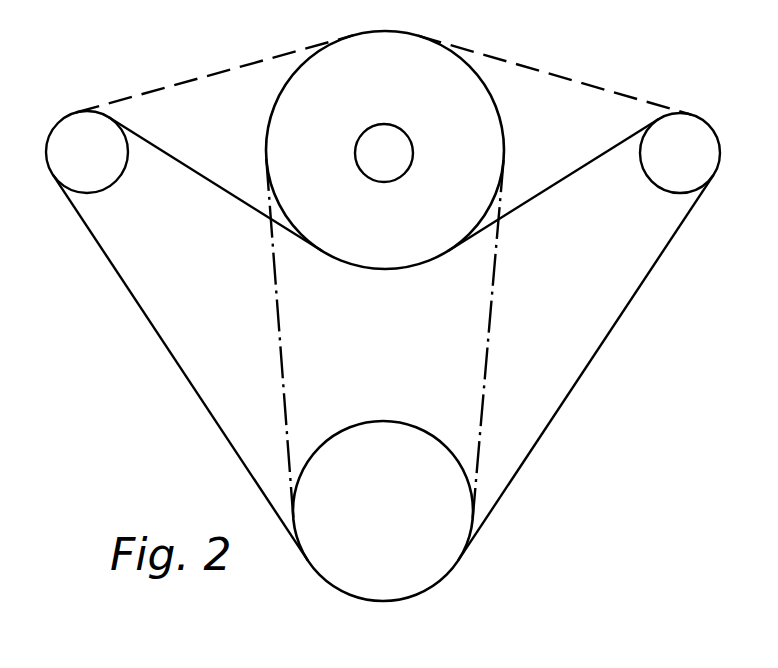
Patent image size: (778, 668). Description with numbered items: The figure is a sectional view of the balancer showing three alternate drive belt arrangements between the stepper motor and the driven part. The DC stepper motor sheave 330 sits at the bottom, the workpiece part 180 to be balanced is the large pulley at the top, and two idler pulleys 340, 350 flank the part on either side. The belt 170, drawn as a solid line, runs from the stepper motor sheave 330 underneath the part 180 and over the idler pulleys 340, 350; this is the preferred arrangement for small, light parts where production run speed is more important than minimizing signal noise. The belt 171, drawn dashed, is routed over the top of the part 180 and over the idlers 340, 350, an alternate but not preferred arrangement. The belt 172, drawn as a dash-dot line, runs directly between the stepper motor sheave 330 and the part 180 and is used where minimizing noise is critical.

The belt 170 is at (599, 129).
The belt 171 is at (579, 72).
The belt 172 is at (492, 300).
The workpiece part 180 is at (487, 88).
The DC stepper motor sheave 330 is at (442, 442).
The idler pulley 340 is at (721, 78).
The idler pulley 350 is at (68, 110).